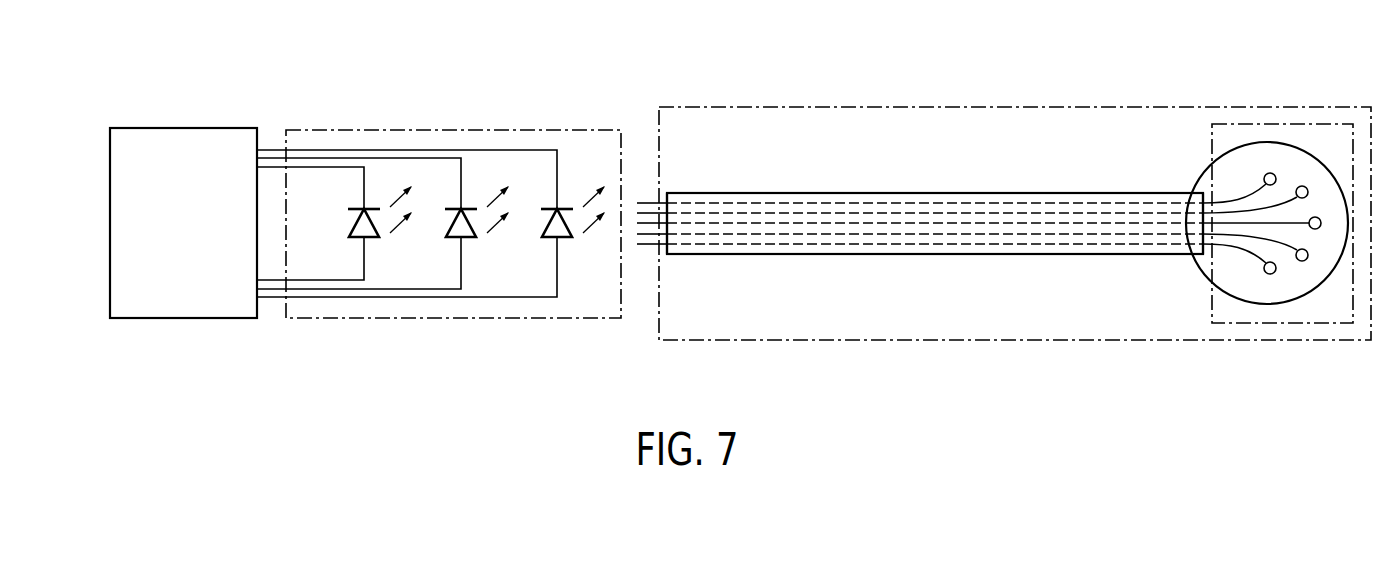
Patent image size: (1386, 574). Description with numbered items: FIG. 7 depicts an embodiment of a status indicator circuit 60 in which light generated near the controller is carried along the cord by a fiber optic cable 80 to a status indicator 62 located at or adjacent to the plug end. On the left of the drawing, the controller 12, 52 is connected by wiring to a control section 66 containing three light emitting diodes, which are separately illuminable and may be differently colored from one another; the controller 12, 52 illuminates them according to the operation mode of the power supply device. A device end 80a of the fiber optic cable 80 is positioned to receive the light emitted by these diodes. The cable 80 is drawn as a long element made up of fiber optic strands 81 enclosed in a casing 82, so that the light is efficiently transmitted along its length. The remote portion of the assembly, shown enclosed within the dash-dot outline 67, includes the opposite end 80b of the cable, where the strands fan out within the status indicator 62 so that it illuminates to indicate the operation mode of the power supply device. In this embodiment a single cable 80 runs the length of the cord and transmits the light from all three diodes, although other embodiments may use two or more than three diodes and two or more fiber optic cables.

The controller 12 is at (177, 206).
The controller 52 is at (185, 128).
The control section 66 is at (453, 130).
The status indicator circuit 60 is at (857, 52).
The light delivery assembly 67 is at (1133, 107).
The fiber optic cable 80 is at (995, 268).
The device end 80a is at (680, 176).
The distal end of light guide 80b is at (1230, 177).
The fiber optic strands 81 is at (763, 233).
The casing 82 is at (933, 254).
The status indicator 62 is at (1241, 268).